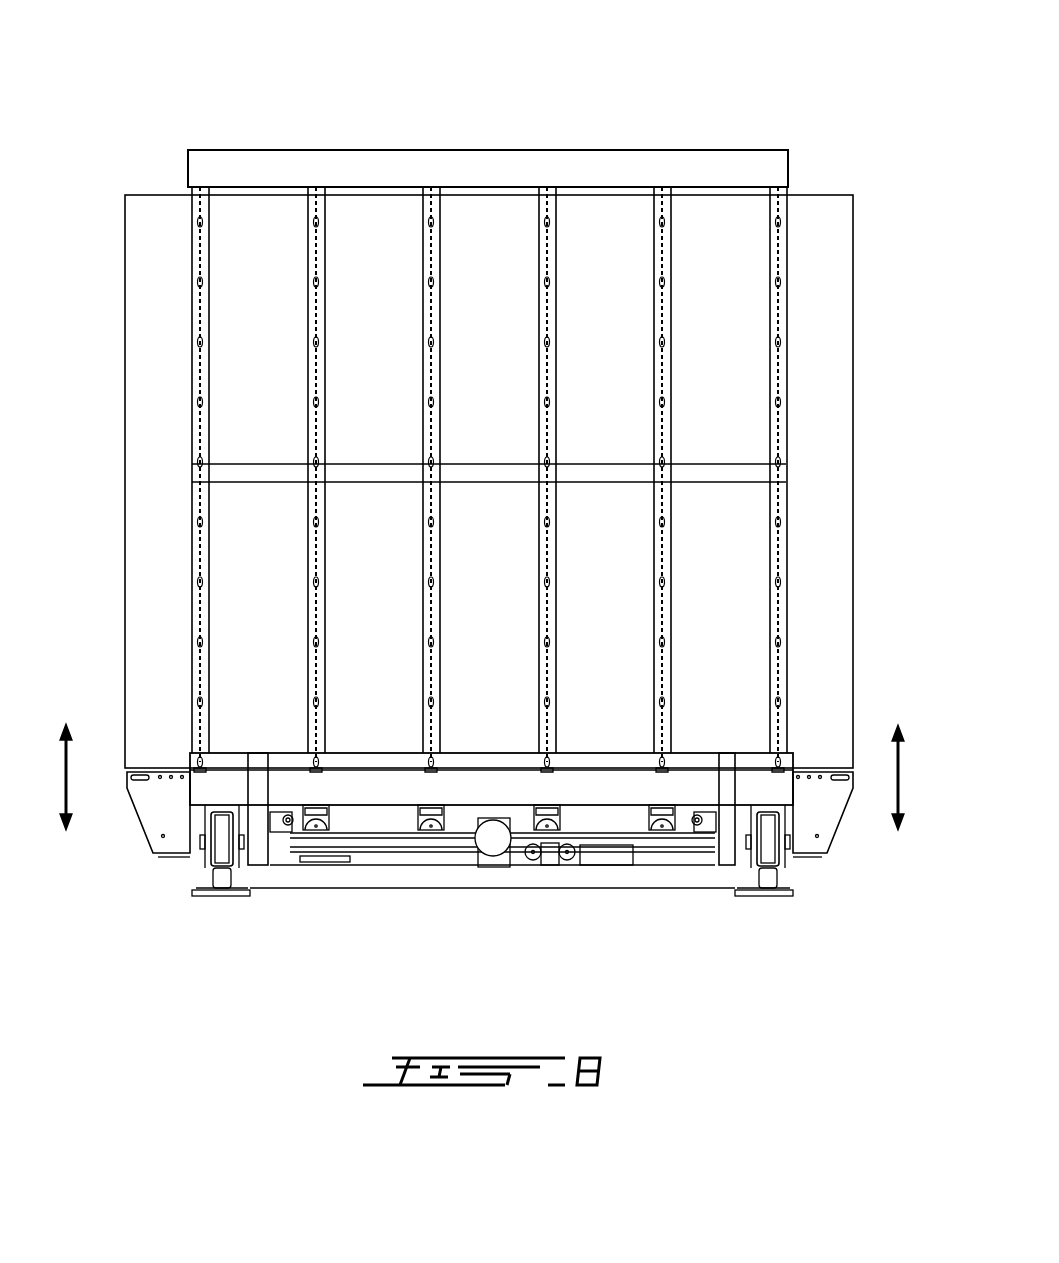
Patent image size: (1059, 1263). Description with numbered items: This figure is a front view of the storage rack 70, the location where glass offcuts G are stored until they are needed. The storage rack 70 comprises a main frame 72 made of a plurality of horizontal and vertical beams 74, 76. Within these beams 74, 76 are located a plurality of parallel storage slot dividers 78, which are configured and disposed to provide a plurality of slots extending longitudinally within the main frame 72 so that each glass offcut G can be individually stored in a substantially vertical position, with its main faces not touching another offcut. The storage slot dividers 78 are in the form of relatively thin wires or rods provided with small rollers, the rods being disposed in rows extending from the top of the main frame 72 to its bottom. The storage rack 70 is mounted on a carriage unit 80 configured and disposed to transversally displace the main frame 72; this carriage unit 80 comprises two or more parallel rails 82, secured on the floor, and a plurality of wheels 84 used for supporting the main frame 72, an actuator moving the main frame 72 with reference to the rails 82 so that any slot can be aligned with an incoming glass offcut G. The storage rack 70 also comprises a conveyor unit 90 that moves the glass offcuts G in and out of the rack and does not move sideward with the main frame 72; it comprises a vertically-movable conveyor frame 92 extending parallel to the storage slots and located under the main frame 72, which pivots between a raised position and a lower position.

The storage rack 70 is at (116, 166).
The main frame 72 is at (662, 147).
The horizontal beam 74 is at (192, 210).
The vertical beam 76 is at (297, 170).
The storage slot dividers 78 is at (318, 373).
The carriage unit 80 is at (178, 878).
The rails 82 is at (220, 896).
The wheels 84 is at (222, 847).
The conveyor unit 90 is at (117, 814).
The conveyor frame 92 is at (153, 812).
The glass offcuts G is at (165, 560).